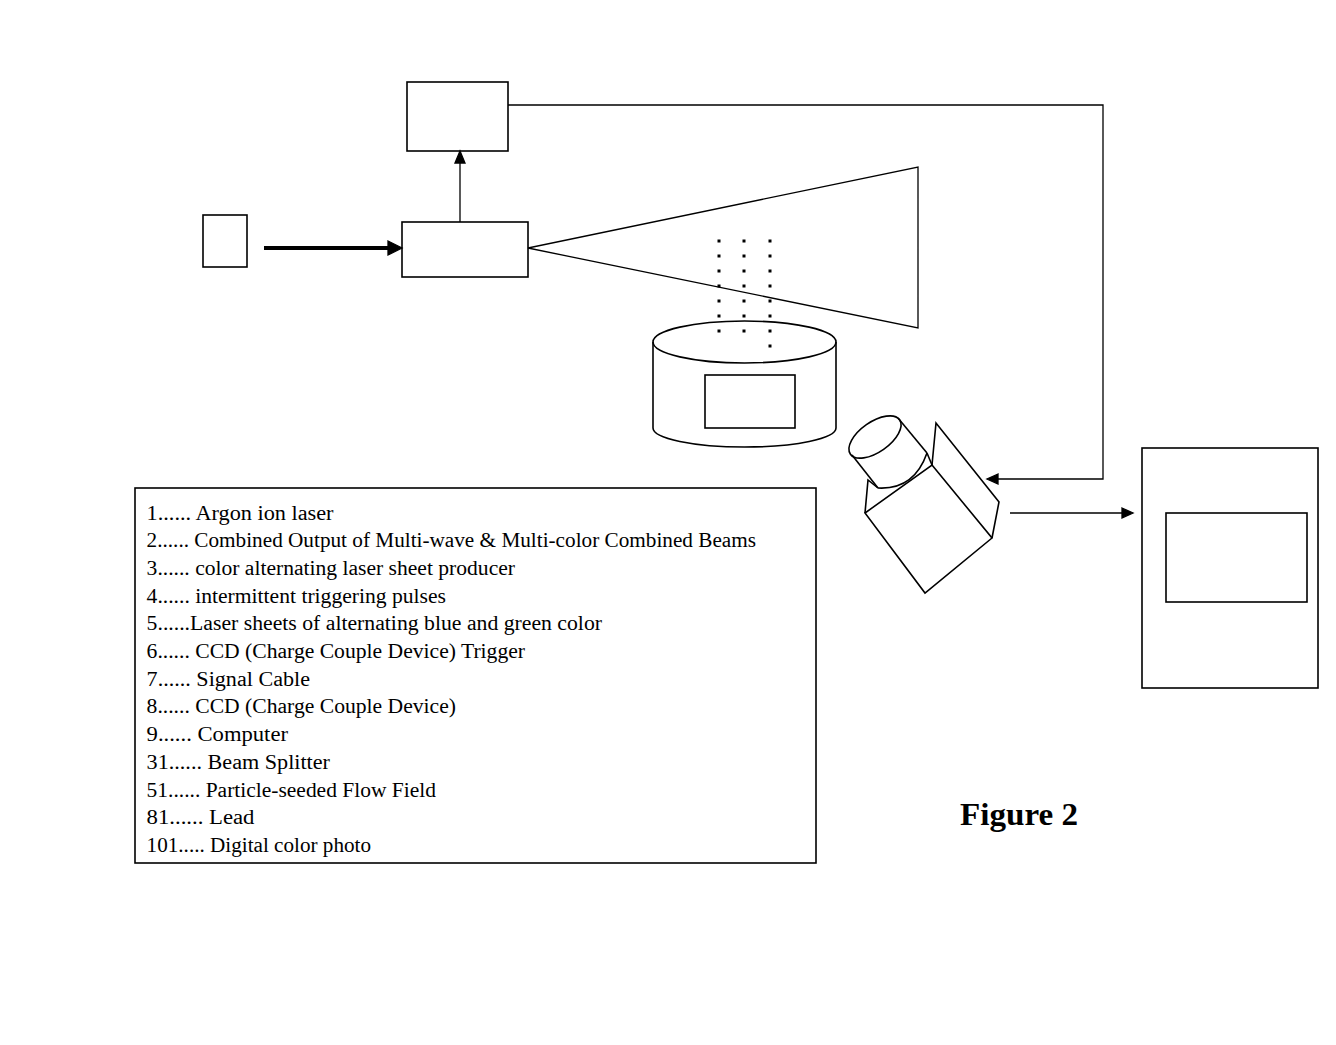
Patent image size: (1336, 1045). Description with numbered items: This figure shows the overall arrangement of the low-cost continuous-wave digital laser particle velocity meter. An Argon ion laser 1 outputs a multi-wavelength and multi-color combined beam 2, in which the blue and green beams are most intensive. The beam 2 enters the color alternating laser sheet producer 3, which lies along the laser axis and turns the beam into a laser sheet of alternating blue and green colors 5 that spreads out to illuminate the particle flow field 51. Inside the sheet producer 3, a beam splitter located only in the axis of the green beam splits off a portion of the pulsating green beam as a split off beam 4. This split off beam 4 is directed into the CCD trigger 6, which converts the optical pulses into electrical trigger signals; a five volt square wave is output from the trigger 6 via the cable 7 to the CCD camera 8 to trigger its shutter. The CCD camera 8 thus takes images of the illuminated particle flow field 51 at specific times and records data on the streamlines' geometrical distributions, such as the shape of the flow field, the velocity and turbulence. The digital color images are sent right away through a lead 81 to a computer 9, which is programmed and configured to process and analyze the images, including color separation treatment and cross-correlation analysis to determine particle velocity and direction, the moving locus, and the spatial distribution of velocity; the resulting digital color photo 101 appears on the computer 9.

The Argon ion laser 1 is at (212, 215).
The multi-wavelength and multi-color combined beam 2 is at (318, 252).
The color alternating laser sheet producer 3 is at (442, 277).
The split off beam 4 is at (462, 208).
The laser sheet of alternating blue and green colors 5 is at (920, 293).
The CCD trigger 6 is at (435, 82).
The cable 7 is at (1103, 172).
The CCD camera 8 is at (962, 568).
The computer 9 is at (1178, 448).
The particle flow field 51 is at (795, 392).
The lead 81 is at (1063, 520).
The Digital color photo 101 is at (1207, 602).